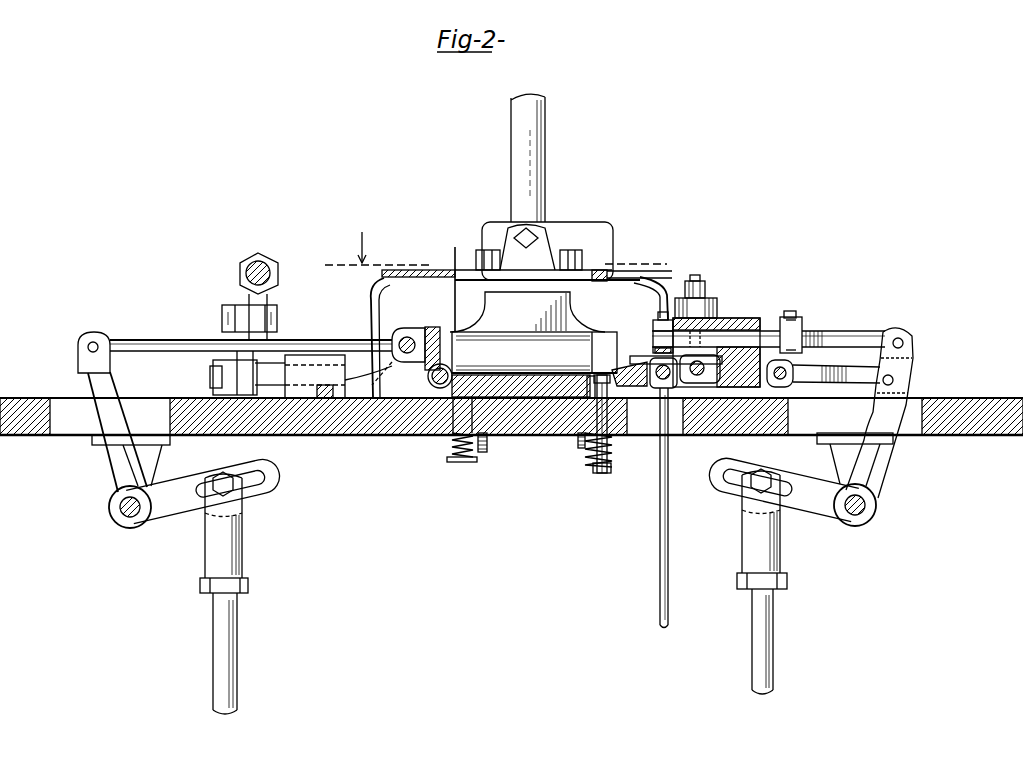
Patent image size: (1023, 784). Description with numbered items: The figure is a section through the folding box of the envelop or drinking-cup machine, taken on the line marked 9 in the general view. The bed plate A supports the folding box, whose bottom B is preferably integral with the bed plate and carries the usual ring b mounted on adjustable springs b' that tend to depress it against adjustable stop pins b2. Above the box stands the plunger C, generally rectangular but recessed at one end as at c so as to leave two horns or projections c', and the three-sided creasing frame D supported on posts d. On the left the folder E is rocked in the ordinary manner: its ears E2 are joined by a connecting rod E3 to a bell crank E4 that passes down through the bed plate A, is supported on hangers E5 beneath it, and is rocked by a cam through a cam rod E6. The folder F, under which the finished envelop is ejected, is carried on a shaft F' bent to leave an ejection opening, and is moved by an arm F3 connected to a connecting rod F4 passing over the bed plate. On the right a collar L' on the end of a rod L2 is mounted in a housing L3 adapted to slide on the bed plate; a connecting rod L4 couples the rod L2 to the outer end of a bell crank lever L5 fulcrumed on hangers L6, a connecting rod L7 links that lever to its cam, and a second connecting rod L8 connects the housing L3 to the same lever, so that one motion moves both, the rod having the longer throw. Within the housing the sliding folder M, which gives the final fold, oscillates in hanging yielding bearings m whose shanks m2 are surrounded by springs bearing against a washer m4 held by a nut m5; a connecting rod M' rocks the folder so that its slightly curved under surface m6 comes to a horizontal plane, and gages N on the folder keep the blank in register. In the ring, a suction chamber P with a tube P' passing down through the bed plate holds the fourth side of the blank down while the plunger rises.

The bed plate A is at (965, 398).
The bottom of the folding box B is at (546, 378).
The plunger C is at (581, 272).
The recess c is at (608, 261).
The horns or projections c' is at (639, 259).
The creasing frame D is at (511, 285).
The posts d is at (372, 289).
The section line 9 is at (355, 265).
The folder E is at (437, 330).
The ears E2 is at (410, 330).
The connecting rod E3 is at (327, 332).
The bell crank E4 is at (112, 376).
The hangers E5 is at (157, 466).
The cam rod E6 is at (237, 632).
The folder F is at (527, 312).
The shaft F' is at (323, 376).
The arm F3 is at (240, 307).
The connecting rod F4 is at (240, 273).
The collar L' is at (652, 307).
The rod L2 is at (766, 330).
The housing L3 is at (735, 318).
The connecting rod L4 is at (866, 321).
The bell crank lever L5 is at (908, 372).
The hangers L6 is at (833, 455).
The connecting rod L7 is at (773, 642).
The second connecting rod L8 is at (837, 364).
The sliding folder M is at (614, 424).
The connecting rod M' is at (644, 508).
The yielding bearings m is at (680, 390).
The shanks m2 is at (695, 279).
The washer m4 is at (712, 297).
The nut m5 is at (710, 288).
The under horizontal surface m6 is at (603, 472).
The gages N is at (637, 365).
The chamber P is at (655, 348).
The tube P' is at (589, 453).
The ring b is at (506, 426).
The adjustable springs b' is at (529, 467).
The adjustable stop pins b2 is at (575, 445).